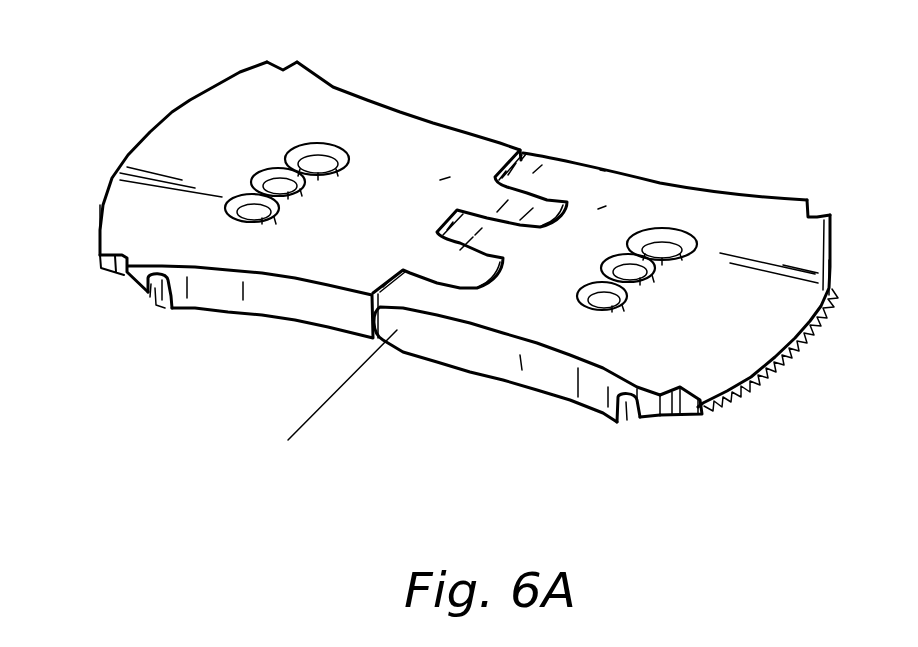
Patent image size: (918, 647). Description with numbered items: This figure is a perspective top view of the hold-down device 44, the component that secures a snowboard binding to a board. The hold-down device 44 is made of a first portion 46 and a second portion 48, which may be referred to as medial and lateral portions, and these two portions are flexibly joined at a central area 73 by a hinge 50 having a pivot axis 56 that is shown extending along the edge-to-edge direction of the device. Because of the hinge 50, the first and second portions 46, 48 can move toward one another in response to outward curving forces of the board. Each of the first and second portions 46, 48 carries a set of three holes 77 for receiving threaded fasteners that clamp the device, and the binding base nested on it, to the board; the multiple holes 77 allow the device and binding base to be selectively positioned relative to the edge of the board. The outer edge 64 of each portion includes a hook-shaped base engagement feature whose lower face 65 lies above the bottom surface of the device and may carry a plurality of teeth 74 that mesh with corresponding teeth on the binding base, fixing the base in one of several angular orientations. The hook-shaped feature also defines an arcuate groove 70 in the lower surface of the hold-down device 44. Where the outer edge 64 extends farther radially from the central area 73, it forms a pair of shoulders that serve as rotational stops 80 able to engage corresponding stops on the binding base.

The hold-down device 44 is at (443, 370).
The first portion 46 is at (317, 277).
The second portion 48 is at (563, 347).
The hinge 50 is at (525, 178).
The pivot axis 56 is at (575, 152).
The outer edge 64 is at (102, 202).
The lower face 65 is at (152, 300).
The arcuate groove 70 is at (162, 300).
The central area 73 is at (445, 178).
The teeth 74 is at (800, 345).
The holes 77 is at (318, 156).
The rotational stops 80 is at (278, 62).